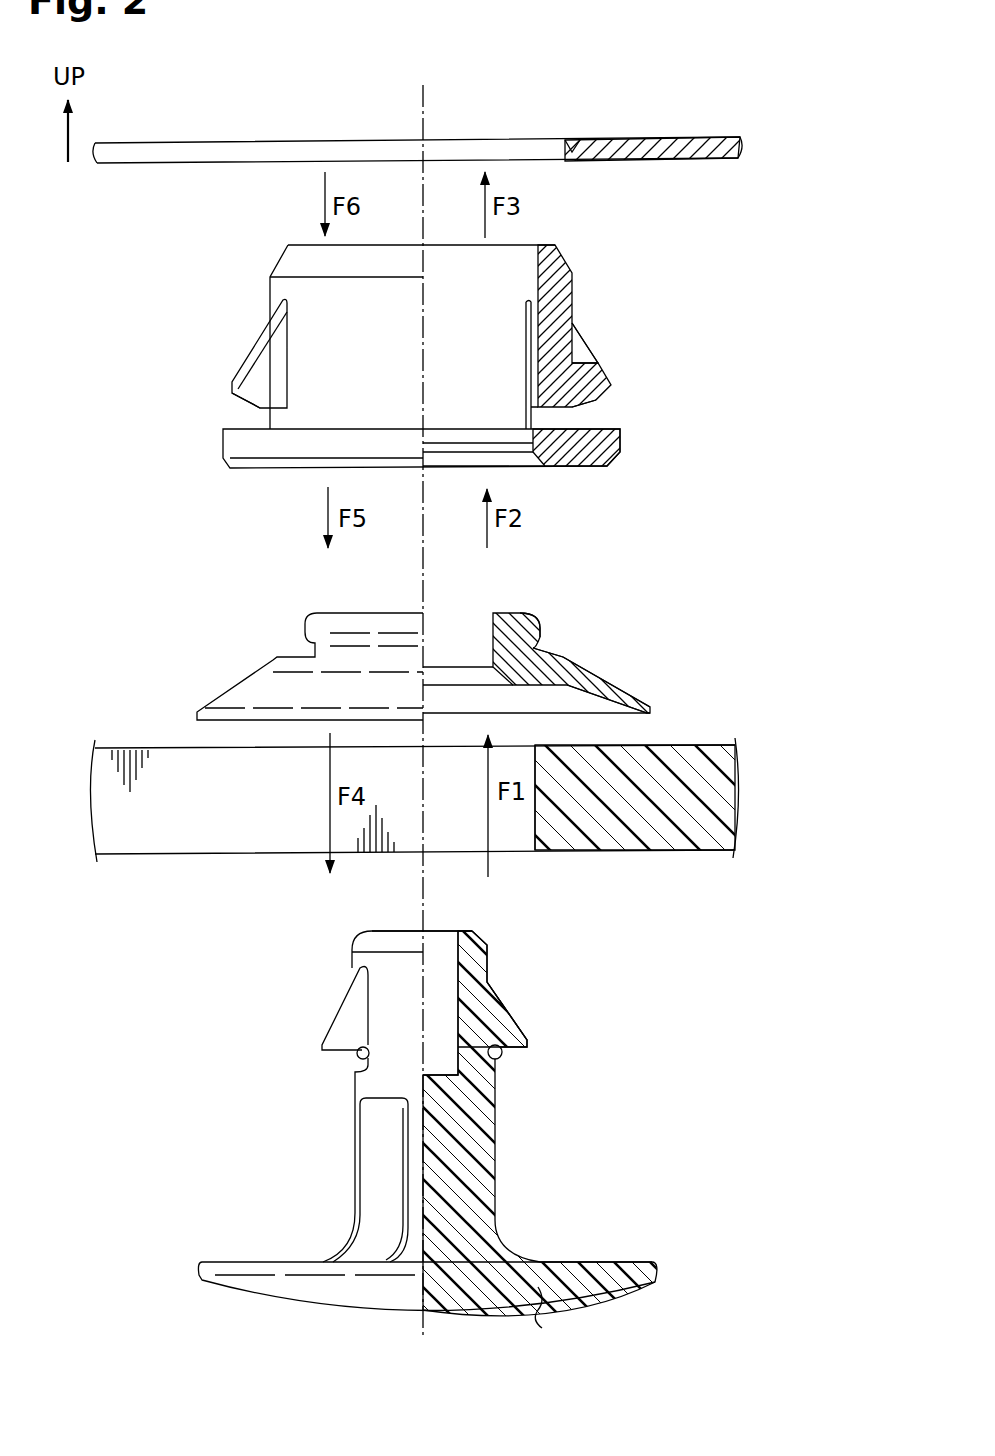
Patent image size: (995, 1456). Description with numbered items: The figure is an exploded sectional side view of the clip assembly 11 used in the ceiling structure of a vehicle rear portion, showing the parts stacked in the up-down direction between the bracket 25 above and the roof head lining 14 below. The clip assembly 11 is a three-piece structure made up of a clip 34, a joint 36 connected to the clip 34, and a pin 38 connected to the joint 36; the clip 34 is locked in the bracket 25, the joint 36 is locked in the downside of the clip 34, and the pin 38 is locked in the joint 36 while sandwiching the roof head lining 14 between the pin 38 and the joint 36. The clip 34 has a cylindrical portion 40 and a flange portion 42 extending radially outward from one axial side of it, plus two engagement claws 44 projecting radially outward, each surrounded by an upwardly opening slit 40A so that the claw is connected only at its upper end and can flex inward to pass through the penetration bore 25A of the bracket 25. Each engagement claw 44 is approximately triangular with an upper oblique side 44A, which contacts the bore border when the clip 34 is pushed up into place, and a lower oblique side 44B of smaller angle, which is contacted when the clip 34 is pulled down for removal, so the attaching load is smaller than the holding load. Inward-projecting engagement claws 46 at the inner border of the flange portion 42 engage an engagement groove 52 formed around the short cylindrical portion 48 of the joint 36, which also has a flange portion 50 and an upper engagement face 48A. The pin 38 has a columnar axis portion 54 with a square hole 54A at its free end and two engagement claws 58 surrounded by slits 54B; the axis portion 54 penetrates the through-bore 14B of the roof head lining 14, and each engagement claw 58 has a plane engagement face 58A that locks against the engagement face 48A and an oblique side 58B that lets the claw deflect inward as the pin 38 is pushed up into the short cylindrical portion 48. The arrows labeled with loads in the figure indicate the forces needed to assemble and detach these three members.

The clip assembly 11 is at (770, 128).
The roof head lining 14 is at (720, 747).
The through-bore 14B is at (535, 850).
The bracket 25 is at (710, 137).
The penetration bore 25A is at (623, 104).
The clip 34 is at (600, 284).
The joint 36 is at (620, 648).
The pin 38 is at (565, 982).
The cylindrical portion 40 is at (558, 262).
The slit 40A is at (280, 330).
The flange portion 42 is at (598, 466).
The engagement claw 44 is at (280, 383).
The oblique side 44A is at (262, 340).
The oblique side 44B is at (242, 402).
The engagement claw 46 is at (547, 466).
The short cylindrical portion 48 is at (490, 633).
The engagement face 48A is at (524, 620).
The flange portion 50 is at (626, 694).
The engagement groove 52 is at (538, 648).
The axis portion 54 is at (478, 1198).
The square hole 54A is at (482, 892).
The slit 54B is at (500, 1052).
The engagement claw 58 is at (520, 1038).
The engagement face 58A is at (500, 1013).
The oblique side 58B is at (510, 1018).